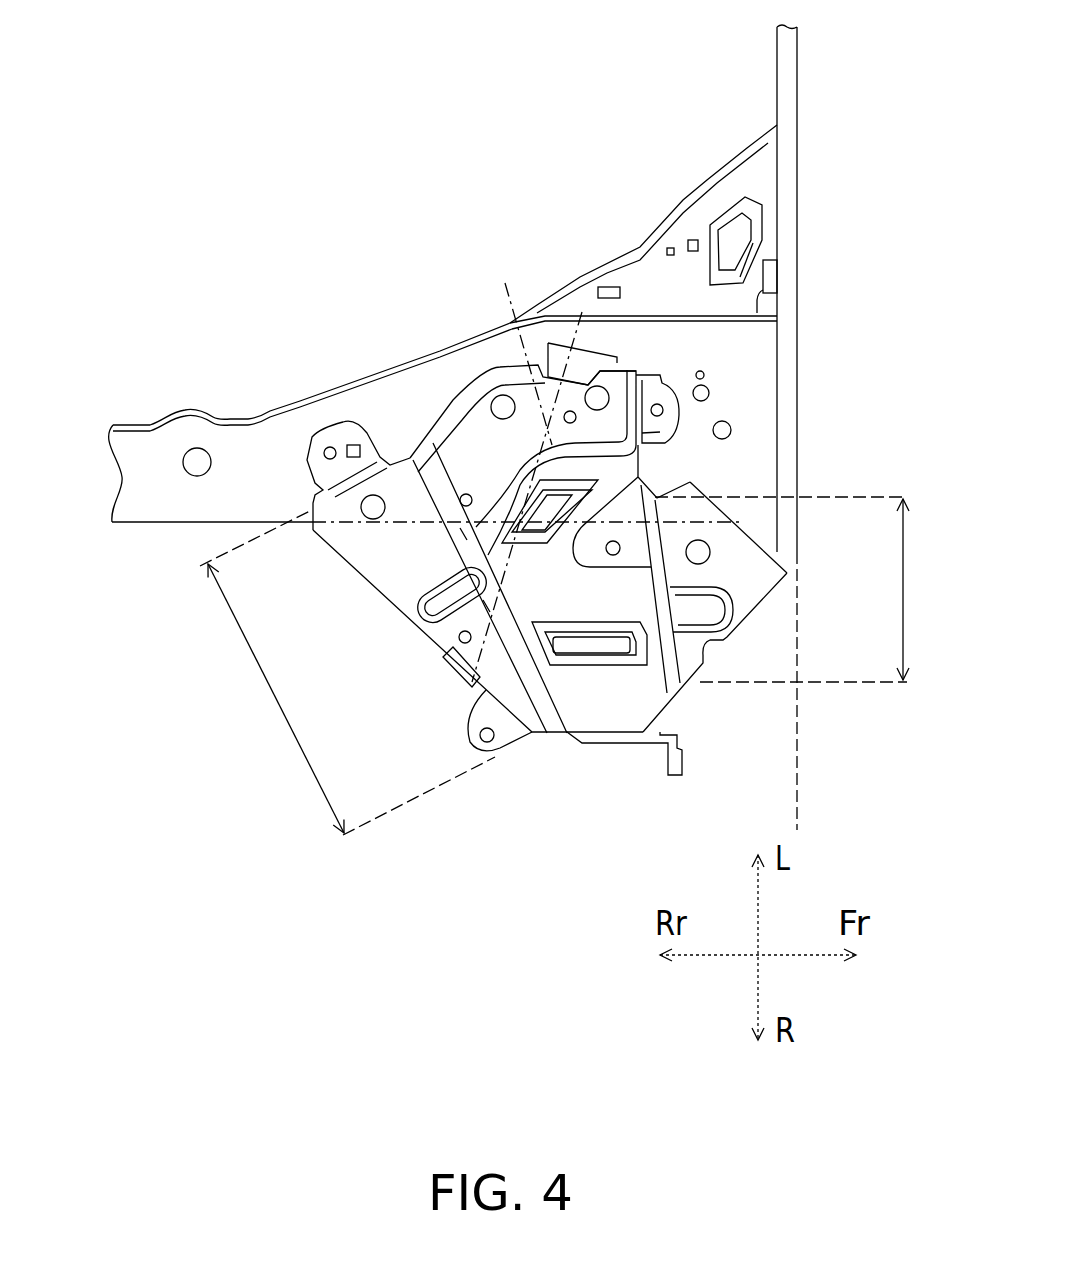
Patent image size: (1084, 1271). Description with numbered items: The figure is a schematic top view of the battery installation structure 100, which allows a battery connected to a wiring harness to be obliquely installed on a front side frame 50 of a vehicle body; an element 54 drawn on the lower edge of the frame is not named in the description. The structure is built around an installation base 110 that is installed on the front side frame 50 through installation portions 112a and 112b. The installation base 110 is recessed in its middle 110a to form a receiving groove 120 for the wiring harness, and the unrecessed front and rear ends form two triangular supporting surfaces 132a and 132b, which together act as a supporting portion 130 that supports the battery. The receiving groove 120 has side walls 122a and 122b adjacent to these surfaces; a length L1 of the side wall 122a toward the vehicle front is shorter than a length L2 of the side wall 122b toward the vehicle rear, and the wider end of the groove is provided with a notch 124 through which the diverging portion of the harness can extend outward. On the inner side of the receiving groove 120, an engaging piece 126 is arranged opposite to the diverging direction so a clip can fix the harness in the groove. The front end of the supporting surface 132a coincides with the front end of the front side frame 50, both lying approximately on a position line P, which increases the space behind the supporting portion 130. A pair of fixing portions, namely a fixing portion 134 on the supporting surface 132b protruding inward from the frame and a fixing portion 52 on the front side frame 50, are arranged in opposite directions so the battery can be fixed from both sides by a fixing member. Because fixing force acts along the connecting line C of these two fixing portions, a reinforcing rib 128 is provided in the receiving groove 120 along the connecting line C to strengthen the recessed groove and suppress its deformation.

The front side frame 50 is at (238, 443).
The fixing portion 52 is at (585, 360).
The lower edge of side rail 54 is at (176, 528).
The battery installation structure 100 is at (172, 708).
The installation base 110 is at (509, 579).
The middle of the installation base 110a is at (565, 575).
The installation portion 112a is at (665, 392).
The installation portion 112b is at (353, 442).
The receiving groove 120 is at (648, 513).
The side wall 122a is at (659, 524).
The side wall 122b is at (435, 505).
The notch 124 is at (655, 480).
The engaging piece 126 is at (600, 742).
The reinforcing rib 128 is at (500, 466).
The supporting portion 130 is at (773, 578).
The supporting surface 132a is at (742, 565).
The supporting surface 132b is at (420, 566).
The fixing portion 134 is at (458, 672).
The connecting line C is at (527, 463).
The position line P is at (810, 691).
The length of side wall 122a L1 is at (795, 589).
The length of side wall 122b L2 is at (347, 672).